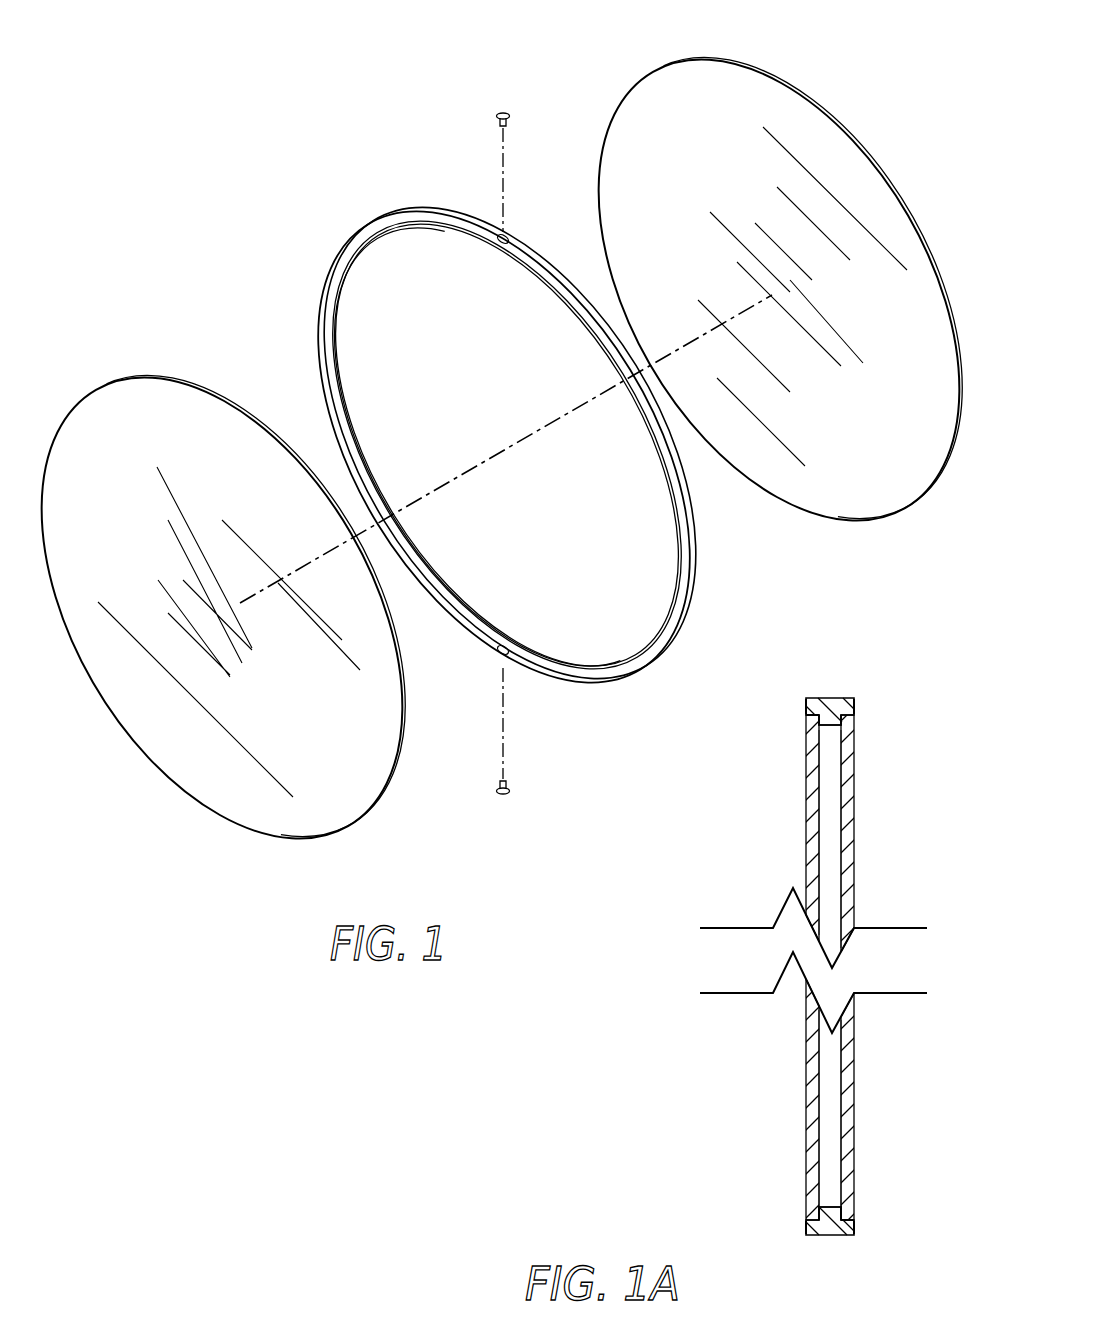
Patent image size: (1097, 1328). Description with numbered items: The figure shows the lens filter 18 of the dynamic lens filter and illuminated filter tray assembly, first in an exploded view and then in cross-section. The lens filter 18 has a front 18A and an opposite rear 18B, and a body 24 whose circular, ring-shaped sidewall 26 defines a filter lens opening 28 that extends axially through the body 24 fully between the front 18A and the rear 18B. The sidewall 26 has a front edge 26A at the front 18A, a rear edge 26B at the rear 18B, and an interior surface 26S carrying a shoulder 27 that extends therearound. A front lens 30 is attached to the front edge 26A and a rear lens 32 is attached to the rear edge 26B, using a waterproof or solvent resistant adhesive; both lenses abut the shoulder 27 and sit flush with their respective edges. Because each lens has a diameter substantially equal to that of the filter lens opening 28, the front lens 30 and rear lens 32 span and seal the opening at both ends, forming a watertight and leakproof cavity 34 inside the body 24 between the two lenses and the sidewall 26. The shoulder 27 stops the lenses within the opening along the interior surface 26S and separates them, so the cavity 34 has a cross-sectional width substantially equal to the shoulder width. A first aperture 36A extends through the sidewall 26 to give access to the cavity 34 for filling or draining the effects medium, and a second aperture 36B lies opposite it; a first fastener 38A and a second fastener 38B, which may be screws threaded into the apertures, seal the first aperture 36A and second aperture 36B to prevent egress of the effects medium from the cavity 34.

In FIG. 1, the lens filter 18 is at (184, 104).
In FIG. 1A, the lens filter 18 is at (843, 654).
In FIG. 1, the front 18A is at (362, 364).
In FIG. 1A, the front 18A is at (800, 793).
In FIG. 1, the rear 18B is at (551, 251).
In FIG. 1A, the rear 18B is at (862, 757).
In FIG. 1, the body 24 is at (440, 211).
In FIG. 1A, the body 24 is at (807, 700).
In FIG. 1, the sidewall 26 is at (475, 227).
In FIG. 1A, the sidewall 26 is at (832, 700).
In FIG. 1, the front edge 26A is at (333, 272).
In FIG. 1A, the front edge 26A is at (807, 705).
In FIG. 1A, the rear edge 26B is at (855, 700).
In FIG. 1A, the interior surface 26S is at (807, 718).
In FIG. 1, the shoulder 27 is at (333, 302).
In FIG. 1A, the shoulder 27 is at (833, 728).
In FIG. 1, the filter lens opening 28 is at (381, 284).
In FIG. 1, the front lens 30 is at (117, 378).
In FIG. 1A, the front lens 30 is at (807, 823).
In FIG. 1, the rear lens 32 is at (698, 59).
In FIG. 1A, the rear lens 32 is at (855, 828).
In FIG. 1A, the cavity 34 is at (830, 867).
In FIG. 1, the first aperture 36A is at (505, 236).
In FIG. 1, the second aperture 36B is at (504, 647).
In FIG. 1, the first fastener 38A is at (502, 112).
In FIG. 1, the second fastener 38B is at (505, 796).